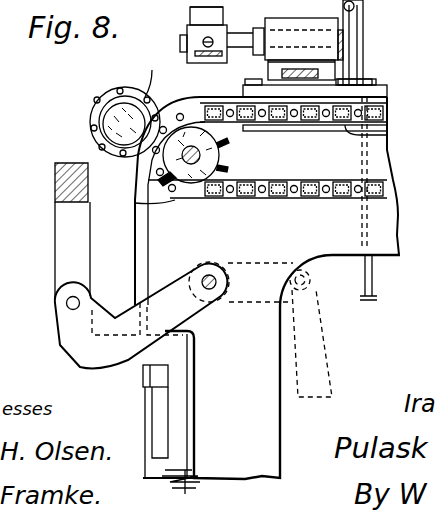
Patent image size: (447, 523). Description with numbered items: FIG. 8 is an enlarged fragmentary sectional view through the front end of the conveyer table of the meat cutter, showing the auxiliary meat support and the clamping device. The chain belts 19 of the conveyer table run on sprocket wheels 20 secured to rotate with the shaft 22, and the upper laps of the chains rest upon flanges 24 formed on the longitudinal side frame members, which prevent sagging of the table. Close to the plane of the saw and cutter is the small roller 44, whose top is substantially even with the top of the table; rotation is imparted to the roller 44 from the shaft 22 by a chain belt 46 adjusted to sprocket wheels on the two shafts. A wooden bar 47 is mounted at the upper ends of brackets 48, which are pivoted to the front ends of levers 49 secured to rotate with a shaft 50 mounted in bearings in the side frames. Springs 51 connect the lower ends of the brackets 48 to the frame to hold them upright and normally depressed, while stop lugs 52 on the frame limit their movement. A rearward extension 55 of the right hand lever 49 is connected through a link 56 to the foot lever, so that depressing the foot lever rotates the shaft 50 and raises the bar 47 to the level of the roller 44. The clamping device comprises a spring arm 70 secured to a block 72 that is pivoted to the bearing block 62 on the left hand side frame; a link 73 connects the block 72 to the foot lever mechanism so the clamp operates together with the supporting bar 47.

The chain belts 19 is at (394, 183).
The sprocket wheels 20 is at (236, 180).
The shaft 22 is at (222, 150).
The flanges 24 is at (388, 139).
The roller 44 is at (115, 108).
The chain belt 46 is at (144, 74).
The bar 47 is at (54, 164).
The brackets 48 is at (60, 333).
The levers 49 is at (136, 310).
The shaft 50 is at (212, 280).
The springs 51 is at (198, 478).
The stop lugs 52 is at (150, 380).
The rearward extension 55 is at (250, 306).
The link 56 is at (327, 362).
The bearing block 62 is at (280, 70).
The arm 70 is at (210, 58).
The block 72 is at (192, 35).
The link 73 is at (364, 62).